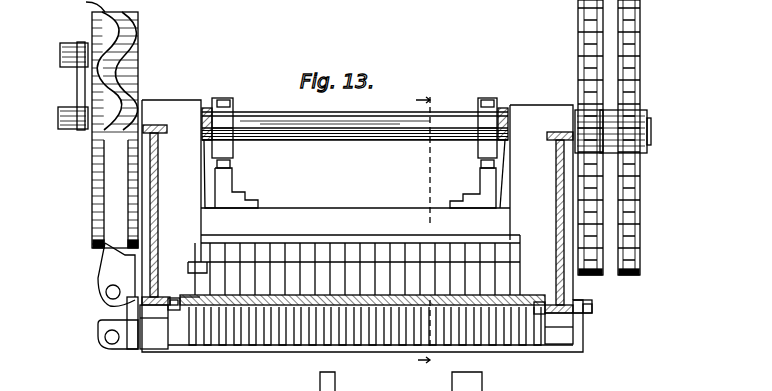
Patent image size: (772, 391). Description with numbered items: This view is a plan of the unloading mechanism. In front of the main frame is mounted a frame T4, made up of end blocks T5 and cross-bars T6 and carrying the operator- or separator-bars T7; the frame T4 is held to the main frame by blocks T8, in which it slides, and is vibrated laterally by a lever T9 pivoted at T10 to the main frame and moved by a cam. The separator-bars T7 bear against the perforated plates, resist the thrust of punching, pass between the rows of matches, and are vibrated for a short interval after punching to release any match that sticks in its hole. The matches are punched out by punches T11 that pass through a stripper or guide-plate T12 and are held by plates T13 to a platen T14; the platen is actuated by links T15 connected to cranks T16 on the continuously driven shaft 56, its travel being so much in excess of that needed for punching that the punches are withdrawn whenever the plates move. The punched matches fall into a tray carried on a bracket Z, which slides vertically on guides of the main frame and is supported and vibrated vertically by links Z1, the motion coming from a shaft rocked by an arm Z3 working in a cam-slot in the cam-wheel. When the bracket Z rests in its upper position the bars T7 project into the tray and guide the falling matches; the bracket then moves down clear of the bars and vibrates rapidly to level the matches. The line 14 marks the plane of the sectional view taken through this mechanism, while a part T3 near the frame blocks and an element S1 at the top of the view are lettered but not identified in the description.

The chain S1 is at (246, 124).
The arm Z3 is at (78, 89).
The bracket Z is at (583, 352).
The links Z1 is at (588, 296).
The bolt T3 is at (177, 312).
The frame T4 is at (362, 339).
The end blocks T5 is at (138, 346).
The cross-bars T6 is at (287, 355).
The operator-bars T7 is at (206, 344).
The blocks T8 is at (534, 314).
The lever T9 is at (98, 317).
The pivot T10 is at (98, 293).
The punches T11 is at (207, 272).
The stripper or guide-plate T12 is at (195, 262).
The plates T13 is at (370, 242).
The platen T14 is at (360, 221).
The links T15 is at (230, 187).
The cranks T16 is at (234, 112).
The shaft 56 is at (366, 146).
The section line 14 is at (429, 224).